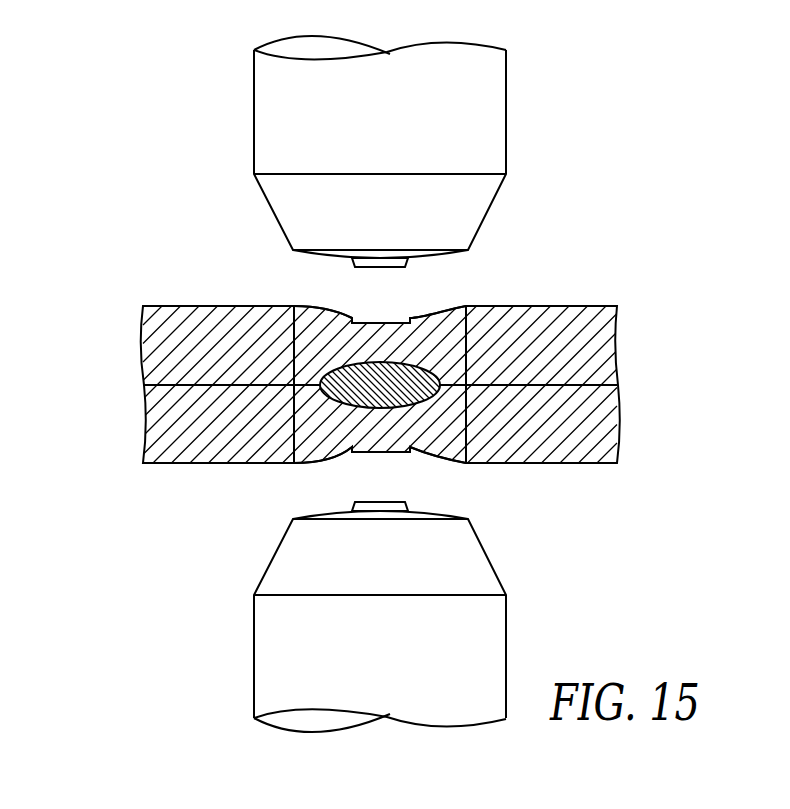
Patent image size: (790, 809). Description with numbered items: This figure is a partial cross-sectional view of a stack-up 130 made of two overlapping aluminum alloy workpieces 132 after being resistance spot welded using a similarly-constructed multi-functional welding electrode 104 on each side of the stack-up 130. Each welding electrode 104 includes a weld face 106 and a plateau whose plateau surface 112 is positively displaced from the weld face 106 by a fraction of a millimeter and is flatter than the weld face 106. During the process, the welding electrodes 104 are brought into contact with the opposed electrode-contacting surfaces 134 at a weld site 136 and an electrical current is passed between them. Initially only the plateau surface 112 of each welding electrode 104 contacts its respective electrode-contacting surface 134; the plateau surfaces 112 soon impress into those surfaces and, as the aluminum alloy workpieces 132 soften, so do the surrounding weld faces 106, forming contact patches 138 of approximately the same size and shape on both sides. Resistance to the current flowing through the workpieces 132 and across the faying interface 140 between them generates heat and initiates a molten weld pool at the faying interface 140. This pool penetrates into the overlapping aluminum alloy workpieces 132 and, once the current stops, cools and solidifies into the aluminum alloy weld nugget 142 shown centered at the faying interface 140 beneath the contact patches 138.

The welding electrode 104 is at (507, 116).
The weld face 106 is at (428, 263).
The plateau surface 112 is at (372, 276).
The stack-up 130 is at (143, 352).
The aluminum alloy workpiece 132 is at (596, 349).
The electrode-contacting surface 134 is at (183, 306).
The weld site 136 is at (470, 352).
The contact patch 138 is at (317, 306).
The faying interface 140 is at (203, 385).
The aluminum alloy weld nugget 142 is at (400, 380).